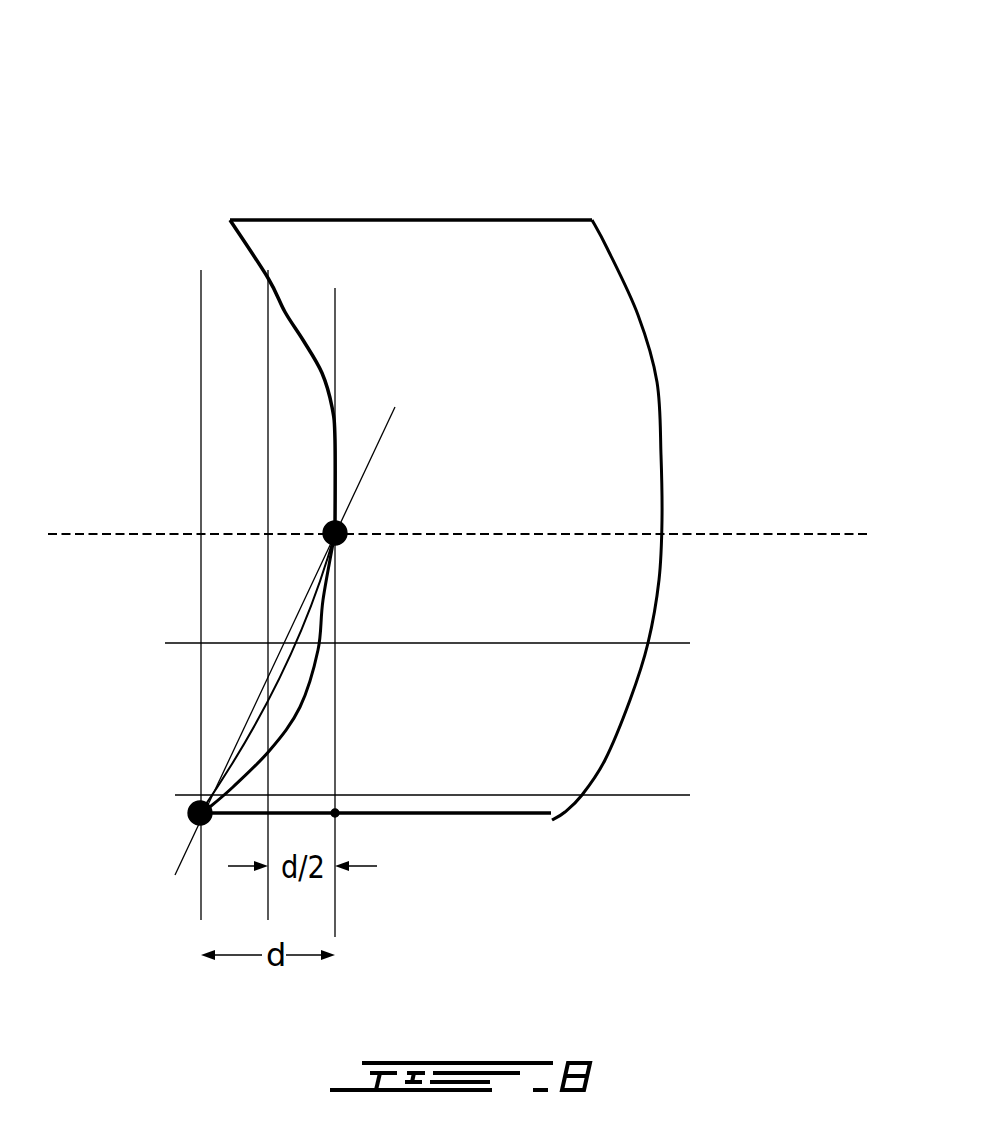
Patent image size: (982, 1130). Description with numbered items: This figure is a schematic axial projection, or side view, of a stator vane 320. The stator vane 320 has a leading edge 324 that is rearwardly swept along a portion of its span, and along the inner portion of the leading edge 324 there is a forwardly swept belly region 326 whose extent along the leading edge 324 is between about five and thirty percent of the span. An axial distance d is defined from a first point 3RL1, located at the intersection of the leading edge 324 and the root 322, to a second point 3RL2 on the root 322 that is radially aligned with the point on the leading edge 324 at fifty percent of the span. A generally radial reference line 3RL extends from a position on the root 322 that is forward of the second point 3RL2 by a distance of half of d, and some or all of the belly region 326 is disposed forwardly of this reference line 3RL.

The stator vane 320 is at (620, 158).
The root 322 is at (475, 815).
The leading edge 324 is at (266, 278).
The belly region 326 is at (236, 727).
The radial reference line 3RL is at (268, 713).
The first point 3RL1 is at (192, 820).
The second point 3RL2 is at (345, 817).